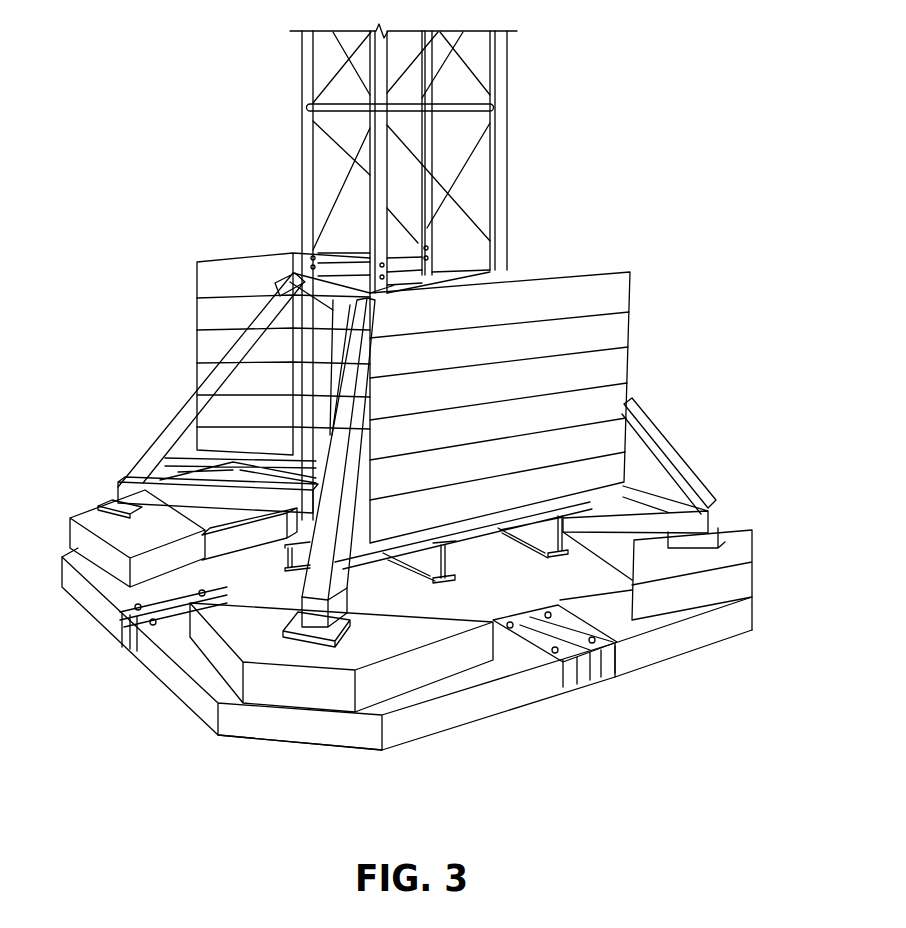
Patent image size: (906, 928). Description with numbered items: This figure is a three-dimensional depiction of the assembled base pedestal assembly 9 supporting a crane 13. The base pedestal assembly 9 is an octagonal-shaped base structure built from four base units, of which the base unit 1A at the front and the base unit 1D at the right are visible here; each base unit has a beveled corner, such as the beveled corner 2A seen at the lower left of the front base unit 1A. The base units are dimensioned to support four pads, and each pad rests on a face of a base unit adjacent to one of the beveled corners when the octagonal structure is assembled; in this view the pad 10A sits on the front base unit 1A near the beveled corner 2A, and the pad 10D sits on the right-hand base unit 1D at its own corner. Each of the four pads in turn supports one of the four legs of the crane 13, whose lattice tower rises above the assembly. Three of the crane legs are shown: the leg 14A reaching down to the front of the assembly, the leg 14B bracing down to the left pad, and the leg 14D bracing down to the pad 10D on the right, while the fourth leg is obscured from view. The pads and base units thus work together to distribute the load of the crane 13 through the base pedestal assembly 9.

The crane 13 is at (510, 186).
The leg of crane 14A is at (353, 583).
The leg of crane 14B is at (134, 458).
The leg of crane 14D is at (686, 492).
The pad 10A is at (323, 690).
The pad 10D is at (730, 538).
The base unit 1A is at (483, 703).
The base unit 1D is at (643, 668).
The beveled corner 2A is at (270, 740).
The base pedestal assembly 9 is at (121, 662).